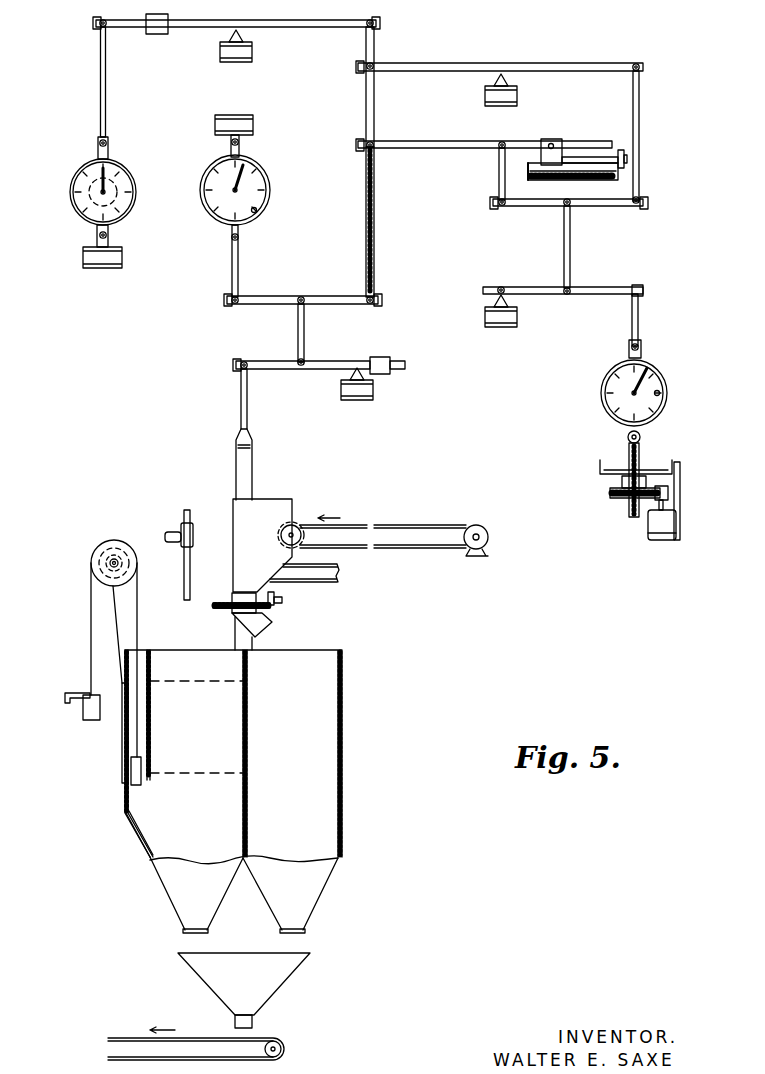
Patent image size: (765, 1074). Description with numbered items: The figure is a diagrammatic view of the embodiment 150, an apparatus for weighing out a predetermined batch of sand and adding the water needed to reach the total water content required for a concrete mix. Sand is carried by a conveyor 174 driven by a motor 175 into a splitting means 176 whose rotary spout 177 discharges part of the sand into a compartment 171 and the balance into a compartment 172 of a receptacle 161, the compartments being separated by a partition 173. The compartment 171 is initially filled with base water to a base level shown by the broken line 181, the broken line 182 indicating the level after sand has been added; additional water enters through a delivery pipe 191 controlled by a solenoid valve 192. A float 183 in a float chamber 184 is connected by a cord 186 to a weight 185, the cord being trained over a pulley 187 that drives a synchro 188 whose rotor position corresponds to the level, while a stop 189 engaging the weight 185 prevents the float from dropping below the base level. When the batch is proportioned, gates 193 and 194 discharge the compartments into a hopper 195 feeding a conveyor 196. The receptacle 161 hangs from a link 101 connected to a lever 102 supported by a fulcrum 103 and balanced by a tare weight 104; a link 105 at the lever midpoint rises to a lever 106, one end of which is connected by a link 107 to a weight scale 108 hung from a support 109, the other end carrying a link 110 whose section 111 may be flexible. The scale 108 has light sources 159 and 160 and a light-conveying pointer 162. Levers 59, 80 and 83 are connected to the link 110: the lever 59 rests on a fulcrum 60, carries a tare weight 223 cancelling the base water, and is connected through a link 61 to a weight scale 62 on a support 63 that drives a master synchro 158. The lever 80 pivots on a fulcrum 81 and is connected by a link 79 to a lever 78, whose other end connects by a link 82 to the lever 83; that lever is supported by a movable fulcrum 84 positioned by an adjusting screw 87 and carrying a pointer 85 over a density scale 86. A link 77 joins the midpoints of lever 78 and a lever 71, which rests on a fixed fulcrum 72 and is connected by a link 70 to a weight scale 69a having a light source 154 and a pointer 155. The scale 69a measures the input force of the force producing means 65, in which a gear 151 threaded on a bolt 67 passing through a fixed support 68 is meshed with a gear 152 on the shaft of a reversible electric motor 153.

The lever 59 is at (284, 24).
The tare weight 223 is at (168, 18).
The embodiment 150 is at (442, 48).
The fulcrum 60 is at (252, 44).
The link 61 is at (100, 104).
The master synchro 158 is at (72, 184).
The weight scale 62 is at (75, 212).
The support 63 is at (80, 262).
The support 109 is at (222, 122).
The weight scale 108 is at (216, 200).
The pointer 162 is at (256, 182).
The light source 159 is at (252, 167).
The light source 160 is at (260, 210).
The link 107 is at (239, 262).
The link 110 is at (375, 112).
The section of link 111 is at (375, 243).
The lever 106 is at (270, 310).
The link 105 is at (304, 330).
The lever 102 is at (277, 374).
The tare weight 104 is at (384, 357).
The fulcrum 103 is at (374, 390).
The link 101 is at (240, 407).
The lever 80 is at (550, 66).
The fulcrum 81 is at (495, 82).
The link 79 is at (640, 130).
The lever 83 is at (450, 148).
The link 82 is at (498, 176).
The fulcrum 84 is at (550, 140).
The pointer 85 is at (560, 172).
The scale 86 is at (526, 163).
The adjusting screw 87 is at (589, 156).
The lever 78 is at (534, 207).
The link 77 is at (571, 246).
The lever 71 is at (592, 298).
The fulcrum 72 is at (490, 302).
The link 70 is at (641, 318).
The weight scale 69a is at (600, 391).
The pointer 155 is at (648, 380).
The light source 154 is at (660, 395).
The fixed support 68 is at (600, 468).
The force producing means 65 is at (716, 472).
The bolt 67 is at (631, 510).
The gear 151 is at (612, 491).
The gear 152 is at (670, 493).
The reversible electric motor 153 is at (660, 542).
The splitting means 176 is at (300, 502).
The conveyor 174 is at (391, 526).
The motor 175 is at (478, 525).
The rotary spout 177 is at (268, 622).
The pulley 187 is at (91, 560).
The synchro 188 is at (100, 546).
The cord 186 is at (90, 622).
The weight 185 is at (83, 712).
The stop 189 is at (72, 693).
The float chamber 184 is at (124, 726).
The float 183 is at (130, 782).
The delivery pipe 191 is at (184, 584).
The solenoid valve 192 is at (176, 532).
The compartment 172 is at (343, 770).
The compartment 171 is at (138, 838).
The partition 173 is at (249, 726).
The receptacle 161 is at (122, 806).
The broken line 182 is at (180, 684).
The broken line 181 is at (180, 776).
The gate 193 is at (183, 931).
The gate 194 is at (305, 931).
The hopper 195 is at (296, 974).
The conveyor 196 is at (272, 1036).